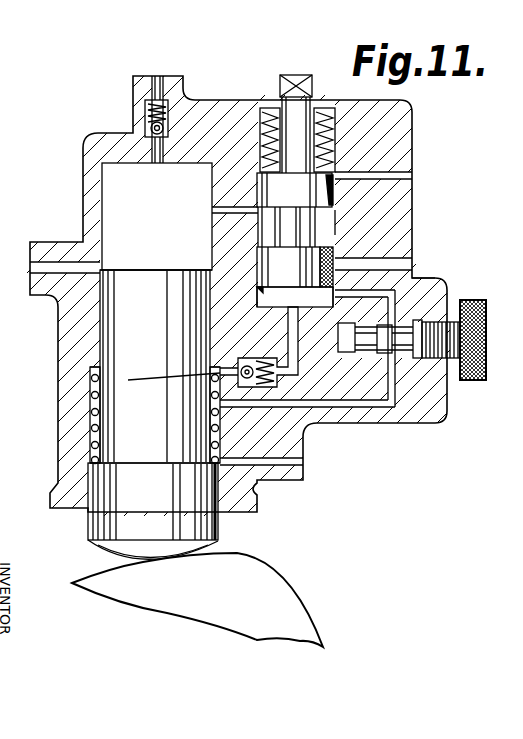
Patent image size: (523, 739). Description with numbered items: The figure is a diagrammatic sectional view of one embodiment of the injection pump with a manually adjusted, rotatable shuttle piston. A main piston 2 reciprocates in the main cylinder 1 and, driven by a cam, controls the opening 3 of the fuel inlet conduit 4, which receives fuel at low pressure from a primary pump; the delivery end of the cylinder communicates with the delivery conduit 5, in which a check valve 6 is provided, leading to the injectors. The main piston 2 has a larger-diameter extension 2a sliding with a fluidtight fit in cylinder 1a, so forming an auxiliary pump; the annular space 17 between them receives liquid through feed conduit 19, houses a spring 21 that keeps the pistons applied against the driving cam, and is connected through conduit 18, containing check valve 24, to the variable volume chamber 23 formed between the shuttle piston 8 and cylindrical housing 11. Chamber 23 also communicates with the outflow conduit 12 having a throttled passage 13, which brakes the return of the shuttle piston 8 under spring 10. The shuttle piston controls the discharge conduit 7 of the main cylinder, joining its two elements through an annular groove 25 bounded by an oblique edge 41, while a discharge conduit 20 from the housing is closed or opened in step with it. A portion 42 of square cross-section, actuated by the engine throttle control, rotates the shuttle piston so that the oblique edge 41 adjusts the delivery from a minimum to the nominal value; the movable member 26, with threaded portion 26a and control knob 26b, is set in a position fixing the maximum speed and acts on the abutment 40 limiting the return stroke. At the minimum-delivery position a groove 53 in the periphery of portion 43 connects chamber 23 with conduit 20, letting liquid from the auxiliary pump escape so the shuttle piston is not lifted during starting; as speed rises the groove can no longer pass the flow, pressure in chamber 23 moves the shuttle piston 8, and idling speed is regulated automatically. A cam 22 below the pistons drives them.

The main cylinder 1 is at (151, 221).
The cylinder 1a is at (97, 453).
The main piston 2 is at (146, 339).
The extension of the main piston 2a is at (157, 506).
The opening of the fuel inlet conduit 3 is at (102, 271).
The fuel inlet conduit 4 is at (32, 266).
The delivery conduit 5 is at (157, 82).
The check valve 6 is at (150, 128).
The discharge conduit 7 is at (212, 210).
The shuttle piston 8 is at (293, 195).
The spring 10 is at (326, 115).
The cylindrical housing 11 is at (341, 299).
The outflow conduit 12 is at (368, 403).
The throttled passage 13 is at (398, 322).
The annular space 17 is at (97, 420).
The conduit 18 is at (289, 375).
The feed conduit 19 is at (304, 461).
The discharge conduit 20 is at (393, 263).
The spring 21 is at (93, 380).
The cam 22 is at (265, 580).
The variable volume chamber 23 is at (299, 307).
The check valve 24 is at (174, 372).
The annular groove 25 is at (336, 222).
The movable member 26 is at (398, 337).
The threaded portion 26a is at (466, 382).
The control knob 26b is at (470, 313).
The abutment 40 is at (256, 291).
The oblique edge 41 is at (334, 201).
The portion of square cross-section 42 is at (296, 80).
The portion of the shuttle piston 43 is at (299, 275).
The groove 53 is at (418, 282).